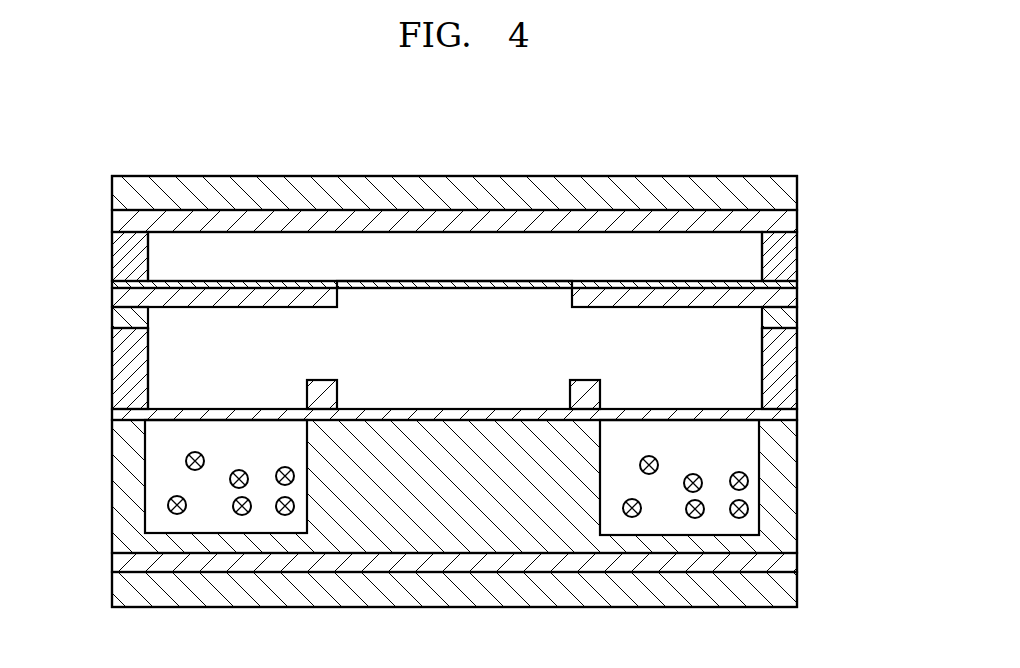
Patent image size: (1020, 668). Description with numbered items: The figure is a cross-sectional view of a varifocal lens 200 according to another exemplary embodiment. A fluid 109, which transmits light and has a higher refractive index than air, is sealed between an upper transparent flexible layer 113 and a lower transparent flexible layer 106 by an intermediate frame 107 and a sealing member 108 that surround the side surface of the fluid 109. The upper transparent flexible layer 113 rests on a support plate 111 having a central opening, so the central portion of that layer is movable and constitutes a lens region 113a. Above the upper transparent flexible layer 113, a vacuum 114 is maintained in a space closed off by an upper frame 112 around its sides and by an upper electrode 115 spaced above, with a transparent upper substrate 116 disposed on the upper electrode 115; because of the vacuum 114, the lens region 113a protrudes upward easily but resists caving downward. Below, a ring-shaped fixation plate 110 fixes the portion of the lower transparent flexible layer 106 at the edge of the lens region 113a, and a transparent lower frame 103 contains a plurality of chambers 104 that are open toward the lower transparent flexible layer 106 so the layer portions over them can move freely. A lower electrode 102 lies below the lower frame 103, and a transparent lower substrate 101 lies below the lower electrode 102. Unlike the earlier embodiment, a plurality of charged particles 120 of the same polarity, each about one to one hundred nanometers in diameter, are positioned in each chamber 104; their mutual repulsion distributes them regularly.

The varifocal lens 200 is at (92, 170).
The transparent lower substrate 101 is at (787, 595).
The lower electrode 102 is at (787, 565).
The lower frame 103 is at (787, 525).
The chamber 104 is at (750, 452).
The lower transparent flexible layer 106 is at (793, 416).
The intermediate frame 107 is at (790, 379).
The sealing member 108 is at (793, 323).
The fluid 109 is at (163, 358).
The fixation plate 110 is at (310, 395).
The support plate 111 is at (793, 298).
The upper frame 112 is at (793, 262).
The upper transparent flexible layer 113 is at (228, 282).
The lens region 113a is at (425, 282).
The vacuum 114 is at (562, 252).
The upper electrode 115 is at (797, 228).
The transparent upper substrate 116 is at (793, 197).
The charged particles 120 is at (749, 482).